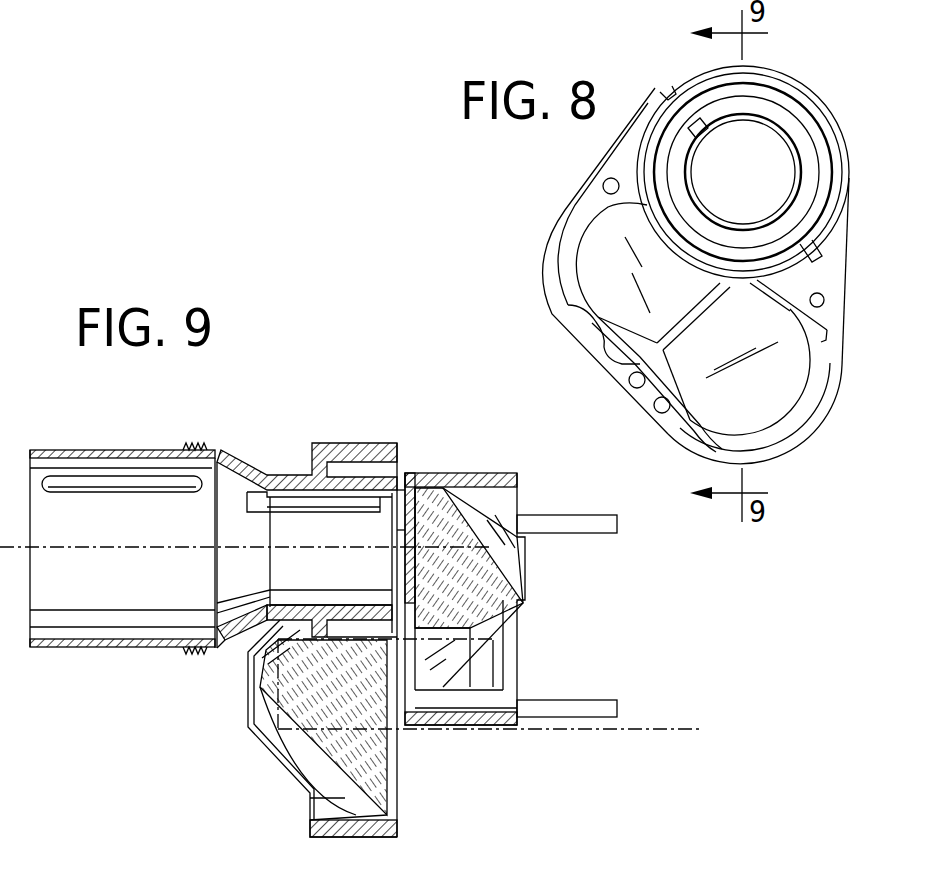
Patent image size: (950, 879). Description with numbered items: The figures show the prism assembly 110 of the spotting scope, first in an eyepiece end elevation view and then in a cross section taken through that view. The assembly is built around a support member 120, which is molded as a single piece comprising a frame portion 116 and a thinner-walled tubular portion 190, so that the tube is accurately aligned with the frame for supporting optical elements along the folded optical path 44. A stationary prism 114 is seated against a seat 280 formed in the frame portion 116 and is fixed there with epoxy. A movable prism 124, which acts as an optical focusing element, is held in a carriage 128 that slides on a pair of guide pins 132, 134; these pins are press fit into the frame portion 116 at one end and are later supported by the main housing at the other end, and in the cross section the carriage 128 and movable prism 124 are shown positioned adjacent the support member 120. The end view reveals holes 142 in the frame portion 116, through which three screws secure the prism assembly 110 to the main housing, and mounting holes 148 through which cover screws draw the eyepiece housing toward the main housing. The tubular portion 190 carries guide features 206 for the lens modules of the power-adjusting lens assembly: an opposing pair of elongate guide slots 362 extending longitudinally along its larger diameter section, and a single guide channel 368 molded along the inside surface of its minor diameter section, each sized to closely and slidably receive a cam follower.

In FIG. 8, the prism assembly 110 is at (834, 80).
In FIG. 9, the prism assembly 110 is at (332, 374).
In FIG. 8, the holes 142 is at (604, 181).
In FIG. 8, the guide channel 368 is at (702, 135).
In FIG. 9, the guide channel 368 is at (310, 510).
In FIG. 8, the seat 280 is at (562, 304).
In FIG. 9, the seat 280 is at (386, 812).
In FIG. 8, the frame portion 116 is at (556, 318).
In FIG. 9, the frame portion 116 is at (345, 838).
In FIG. 8, the mounting holes 148 is at (656, 409).
In FIG. 8, the stationary prism 114 is at (778, 384).
In FIG. 9, the stationary prism 114 is at (282, 742).
In FIG. 9, the guide slots 362 is at (86, 478).
In FIG. 9, the guide features 206 is at (266, 494).
In FIG. 9, the support member 120 is at (356, 422).
In FIG. 9, the carriage 128 is at (462, 470).
In FIG. 9, the guide pin 132 is at (600, 526).
In FIG. 9, the movable prism 124 is at (518, 622).
In FIG. 9, the folded optical path 44 is at (665, 722).
In FIG. 9, the guide pin 134 is at (603, 717).
In FIG. 9, the tubular portion 190 is at (95, 649).